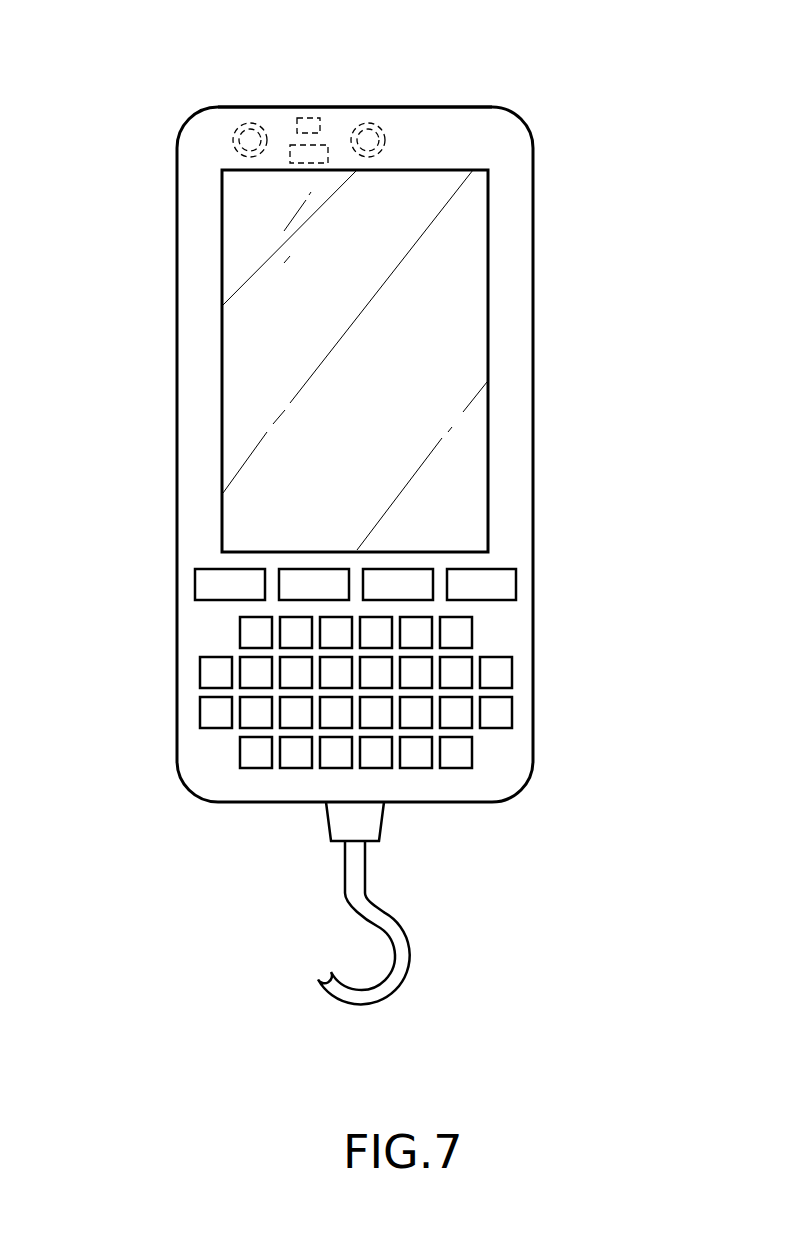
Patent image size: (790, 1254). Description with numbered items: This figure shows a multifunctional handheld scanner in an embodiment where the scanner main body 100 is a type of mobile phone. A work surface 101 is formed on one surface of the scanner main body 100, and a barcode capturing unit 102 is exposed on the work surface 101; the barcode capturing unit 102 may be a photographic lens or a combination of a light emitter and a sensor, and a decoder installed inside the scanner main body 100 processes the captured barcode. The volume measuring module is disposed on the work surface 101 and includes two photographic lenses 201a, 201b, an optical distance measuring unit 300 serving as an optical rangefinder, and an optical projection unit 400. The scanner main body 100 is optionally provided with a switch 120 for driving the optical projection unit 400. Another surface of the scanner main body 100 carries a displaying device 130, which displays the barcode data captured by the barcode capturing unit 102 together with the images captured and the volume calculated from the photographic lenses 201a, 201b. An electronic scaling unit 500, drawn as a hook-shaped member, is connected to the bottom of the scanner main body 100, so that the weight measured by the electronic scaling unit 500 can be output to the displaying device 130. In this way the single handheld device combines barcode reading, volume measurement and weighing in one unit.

The scanner main body 100 is at (537, 305).
The work surface 101 is at (470, 107).
The barcode capturing unit 102 is at (237, 138).
The switch 120 is at (503, 583).
The displaying device 130 is at (458, 253).
The photographic lens 201a is at (372, 123).
The photographic lens 201b is at (245, 123).
The optical distance measuring unit 300 is at (302, 160).
The optical projection unit 400 is at (307, 130).
The electronic scaling unit 500 is at (398, 937).